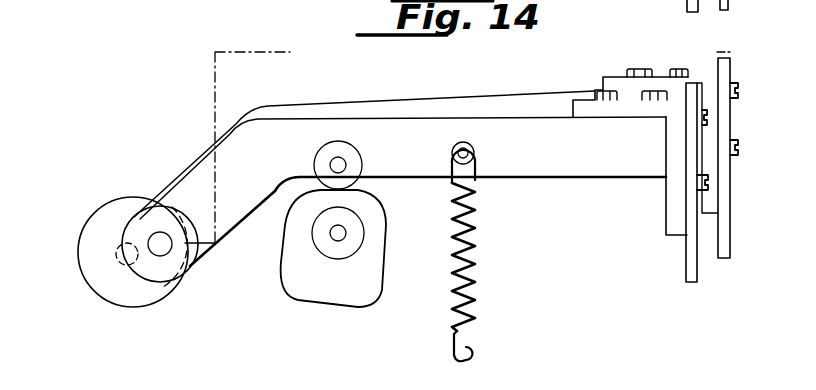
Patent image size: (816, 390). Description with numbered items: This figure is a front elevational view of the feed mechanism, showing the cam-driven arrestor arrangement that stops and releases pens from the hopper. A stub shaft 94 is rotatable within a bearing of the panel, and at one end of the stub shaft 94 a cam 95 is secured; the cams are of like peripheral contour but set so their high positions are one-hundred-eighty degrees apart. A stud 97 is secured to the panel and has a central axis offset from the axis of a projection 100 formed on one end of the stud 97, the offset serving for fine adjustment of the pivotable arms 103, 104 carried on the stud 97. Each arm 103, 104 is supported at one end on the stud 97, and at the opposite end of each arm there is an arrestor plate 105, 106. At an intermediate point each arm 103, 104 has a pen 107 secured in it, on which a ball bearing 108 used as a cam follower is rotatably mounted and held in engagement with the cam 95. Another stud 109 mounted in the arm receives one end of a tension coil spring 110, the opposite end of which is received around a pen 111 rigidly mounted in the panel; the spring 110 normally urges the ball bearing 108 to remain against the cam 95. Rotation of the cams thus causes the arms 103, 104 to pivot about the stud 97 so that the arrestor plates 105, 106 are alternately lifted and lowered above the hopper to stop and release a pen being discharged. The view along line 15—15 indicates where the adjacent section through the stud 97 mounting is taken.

The section line 15— 15 is at (42, 192).
The stub shaft 94 is at (334, 235).
The cam 95 is at (335, 281).
The stud 97 is at (162, 253).
The projection 100 is at (110, 268).
The pivotable arm 103 is at (515, 97).
The pivotable arm 104 is at (493, 118).
The arrestor plate 105 is at (731, 179).
The arrestor plate 106 is at (685, 252).
The pen 107 is at (340, 167).
The ball bearing 108 is at (362, 153).
The stud 109 is at (476, 150).
The tension coil spring 110 is at (471, 293).
The pen 111 is at (476, 355).